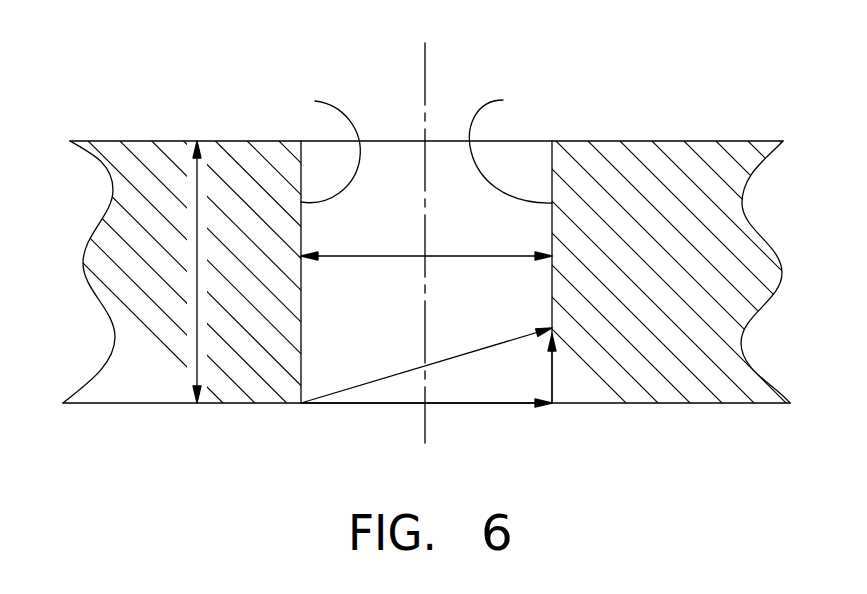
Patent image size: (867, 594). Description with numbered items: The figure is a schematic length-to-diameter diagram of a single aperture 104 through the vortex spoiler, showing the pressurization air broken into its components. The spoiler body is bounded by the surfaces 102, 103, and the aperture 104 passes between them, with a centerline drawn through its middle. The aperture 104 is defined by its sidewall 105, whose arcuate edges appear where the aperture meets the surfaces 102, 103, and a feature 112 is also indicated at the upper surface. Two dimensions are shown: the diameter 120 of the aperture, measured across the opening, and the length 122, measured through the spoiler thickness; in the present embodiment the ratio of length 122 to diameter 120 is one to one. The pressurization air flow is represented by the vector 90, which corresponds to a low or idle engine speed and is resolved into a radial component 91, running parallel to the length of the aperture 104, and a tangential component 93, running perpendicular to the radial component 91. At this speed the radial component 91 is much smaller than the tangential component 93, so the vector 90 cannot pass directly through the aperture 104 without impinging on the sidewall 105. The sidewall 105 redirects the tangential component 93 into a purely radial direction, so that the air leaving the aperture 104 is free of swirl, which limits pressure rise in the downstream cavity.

The pressurization air flow 90 is at (489, 347).
The radial component 91 is at (552, 370).
The tangential component 93 is at (497, 403).
The surface 102 is at (648, 127).
The surface 103 is at (687, 422).
The aperture 104 is at (437, 107).
The sidewall 105 is at (408, 145).
The top surface 112 is at (425, 157).
The diameter 120 is at (410, 258).
The length 122 is at (197, 258).